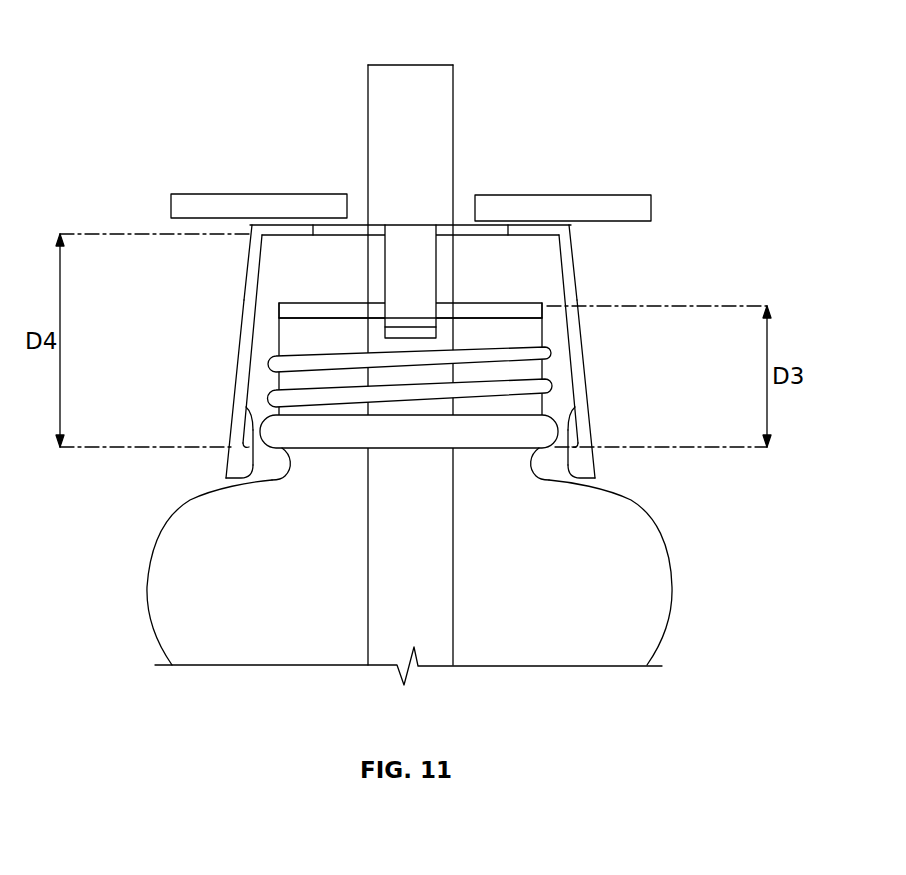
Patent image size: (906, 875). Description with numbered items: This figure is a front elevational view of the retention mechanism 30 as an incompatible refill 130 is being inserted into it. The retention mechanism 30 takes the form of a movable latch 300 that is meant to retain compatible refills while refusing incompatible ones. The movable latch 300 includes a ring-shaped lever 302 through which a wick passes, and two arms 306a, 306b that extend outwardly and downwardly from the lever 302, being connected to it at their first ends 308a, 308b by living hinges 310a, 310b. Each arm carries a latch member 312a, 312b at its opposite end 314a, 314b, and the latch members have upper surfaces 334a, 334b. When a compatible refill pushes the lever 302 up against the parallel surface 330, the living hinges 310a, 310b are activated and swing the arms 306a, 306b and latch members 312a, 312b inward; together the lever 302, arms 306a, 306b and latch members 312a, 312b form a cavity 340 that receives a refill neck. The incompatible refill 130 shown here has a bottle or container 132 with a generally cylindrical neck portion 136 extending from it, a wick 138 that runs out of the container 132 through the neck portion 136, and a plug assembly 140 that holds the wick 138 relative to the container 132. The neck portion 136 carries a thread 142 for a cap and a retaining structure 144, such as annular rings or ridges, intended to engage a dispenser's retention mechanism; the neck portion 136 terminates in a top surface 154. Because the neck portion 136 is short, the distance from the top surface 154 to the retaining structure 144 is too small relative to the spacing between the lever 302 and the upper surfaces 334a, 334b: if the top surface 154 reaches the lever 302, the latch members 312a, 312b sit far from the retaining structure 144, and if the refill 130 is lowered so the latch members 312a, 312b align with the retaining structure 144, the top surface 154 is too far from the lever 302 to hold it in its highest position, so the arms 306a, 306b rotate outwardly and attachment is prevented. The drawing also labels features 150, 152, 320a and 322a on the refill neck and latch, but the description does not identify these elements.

The retention mechanism 30 is at (702, 226).
The incompatible refill 130 is at (731, 532).
The bottle or container 132 is at (650, 598).
The neck portion 136 is at (552, 401).
The wick 138 is at (433, 656).
The plug assembly 140 is at (343, 302).
The thread 142 is at (266, 367).
The retaining structure 144 is at (561, 426).
The bottle neck 150 is at (560, 484).
The left cap portion 152 is at (322, 301).
The top surface 154 is at (522, 302).
The movable latch 300 is at (603, 360).
The ring-shaped lever 302 is at (462, 224).
The arm 306a is at (237, 312).
The arm 306b is at (583, 292).
The first end 308a is at (247, 242).
The first end 308b is at (573, 252).
The living hinge 310a is at (293, 227).
The living hinge 310b is at (527, 227).
The latch member 312a is at (237, 467).
The latch member 312b is at (584, 455).
The end 314a is at (236, 437).
The end 314b is at (585, 432).
The rod 320a is at (390, 260).
The cap inner surface 322a is at (397, 333).
The surface 330 is at (203, 203).
The upper surface 334a is at (239, 410).
The upper surface 334b is at (592, 440).
The cavity 340 is at (552, 313).